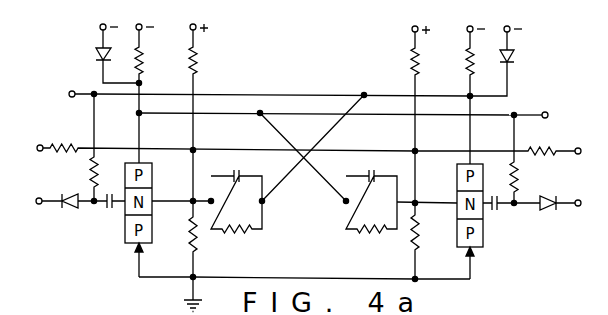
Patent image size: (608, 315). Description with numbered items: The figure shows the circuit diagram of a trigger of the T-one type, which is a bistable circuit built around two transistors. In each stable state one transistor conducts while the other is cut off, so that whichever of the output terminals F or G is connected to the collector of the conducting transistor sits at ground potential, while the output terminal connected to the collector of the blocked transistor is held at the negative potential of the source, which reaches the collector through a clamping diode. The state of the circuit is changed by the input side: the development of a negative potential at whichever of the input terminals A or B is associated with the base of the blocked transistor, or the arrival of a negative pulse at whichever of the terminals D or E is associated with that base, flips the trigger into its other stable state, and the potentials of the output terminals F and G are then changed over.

The input terminal A is at (72, 201).
The input terminal B is at (567, 203).
The terminal D is at (218, 148).
The terminal E is at (504, 151).
The output terminal F is at (263, 94).
The output terminal G is at (538, 116).